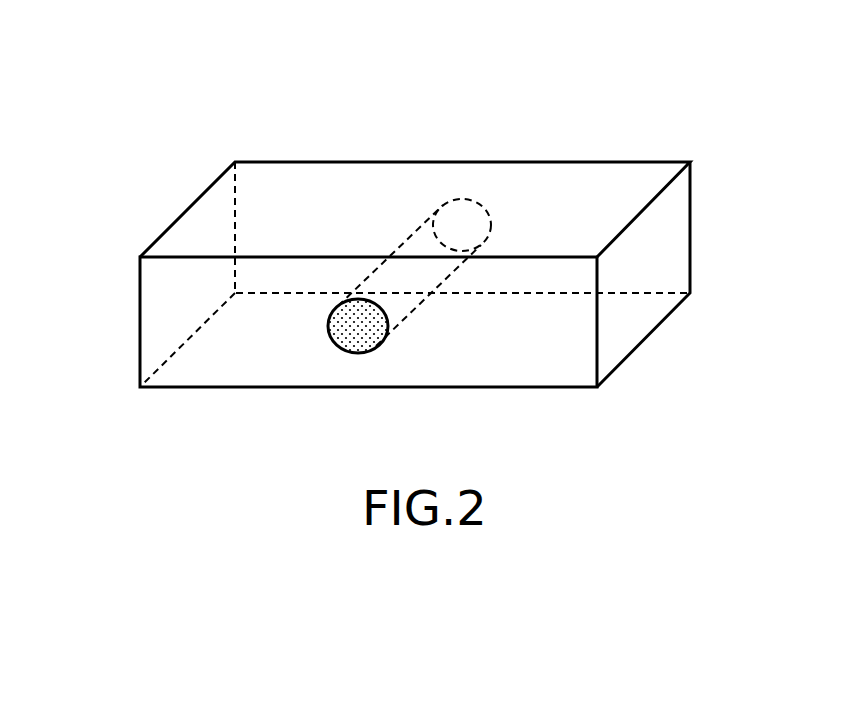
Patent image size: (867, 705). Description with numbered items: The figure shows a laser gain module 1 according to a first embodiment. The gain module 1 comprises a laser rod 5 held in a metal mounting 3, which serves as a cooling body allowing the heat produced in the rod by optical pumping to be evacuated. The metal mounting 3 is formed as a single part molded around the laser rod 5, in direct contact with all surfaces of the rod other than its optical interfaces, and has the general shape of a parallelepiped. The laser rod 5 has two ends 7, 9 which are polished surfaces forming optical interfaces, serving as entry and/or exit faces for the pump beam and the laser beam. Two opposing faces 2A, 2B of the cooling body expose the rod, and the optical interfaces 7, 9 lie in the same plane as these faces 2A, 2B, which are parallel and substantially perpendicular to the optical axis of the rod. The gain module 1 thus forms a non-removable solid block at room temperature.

The gain module 1 is at (264, 100).
The metal mounting 3 is at (598, 177).
The face of the cooling body 2A is at (170, 315).
The face of the cooling body 2B is at (306, 217).
The end of the rod 9 is at (463, 220).
The laser rod 5 is at (398, 300).
The end of the rod 7 is at (353, 338).